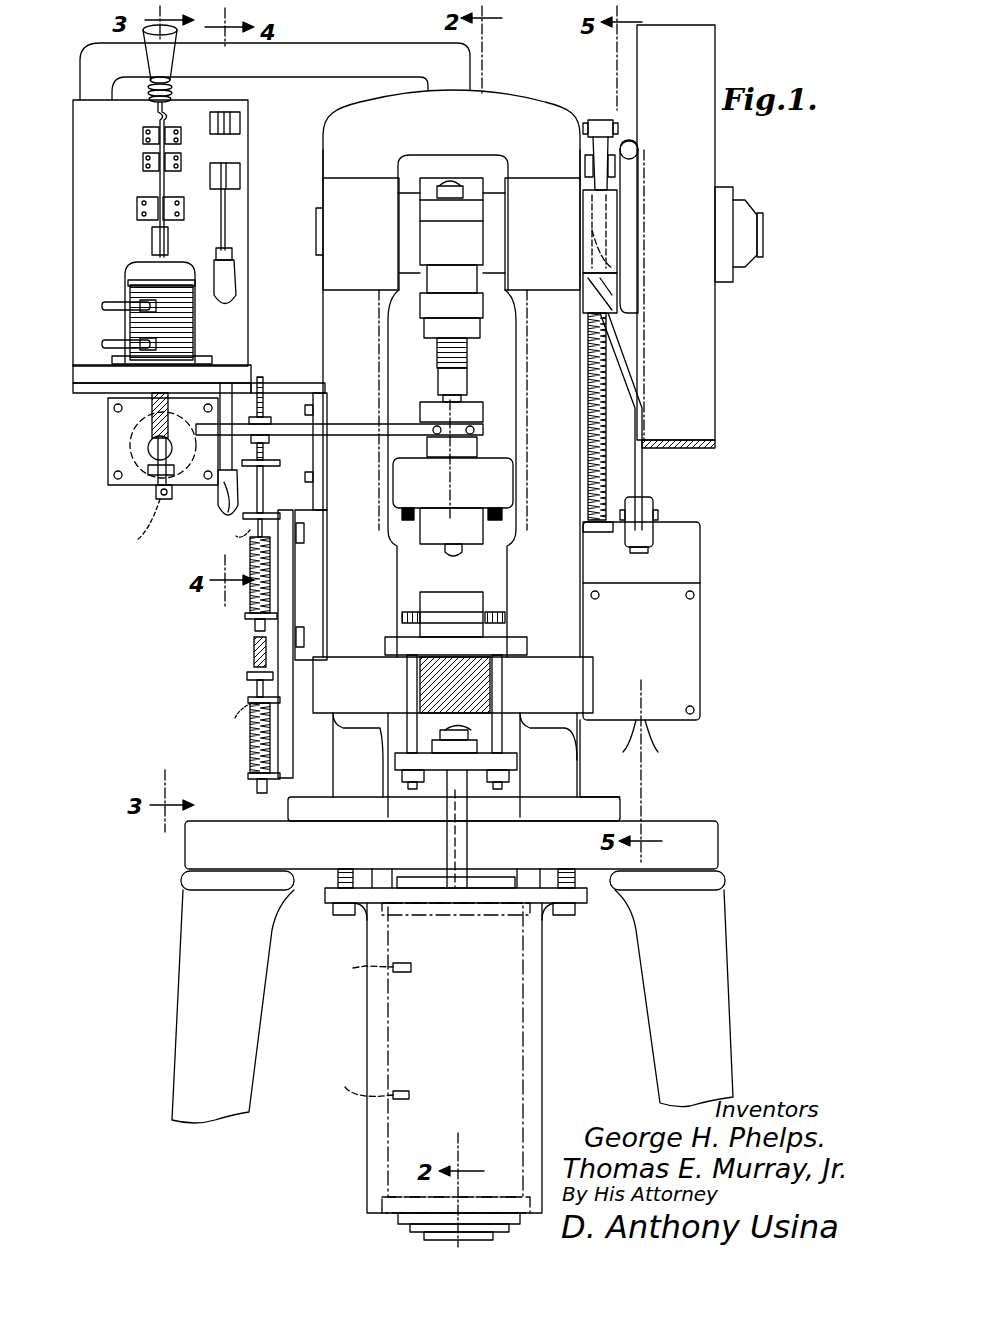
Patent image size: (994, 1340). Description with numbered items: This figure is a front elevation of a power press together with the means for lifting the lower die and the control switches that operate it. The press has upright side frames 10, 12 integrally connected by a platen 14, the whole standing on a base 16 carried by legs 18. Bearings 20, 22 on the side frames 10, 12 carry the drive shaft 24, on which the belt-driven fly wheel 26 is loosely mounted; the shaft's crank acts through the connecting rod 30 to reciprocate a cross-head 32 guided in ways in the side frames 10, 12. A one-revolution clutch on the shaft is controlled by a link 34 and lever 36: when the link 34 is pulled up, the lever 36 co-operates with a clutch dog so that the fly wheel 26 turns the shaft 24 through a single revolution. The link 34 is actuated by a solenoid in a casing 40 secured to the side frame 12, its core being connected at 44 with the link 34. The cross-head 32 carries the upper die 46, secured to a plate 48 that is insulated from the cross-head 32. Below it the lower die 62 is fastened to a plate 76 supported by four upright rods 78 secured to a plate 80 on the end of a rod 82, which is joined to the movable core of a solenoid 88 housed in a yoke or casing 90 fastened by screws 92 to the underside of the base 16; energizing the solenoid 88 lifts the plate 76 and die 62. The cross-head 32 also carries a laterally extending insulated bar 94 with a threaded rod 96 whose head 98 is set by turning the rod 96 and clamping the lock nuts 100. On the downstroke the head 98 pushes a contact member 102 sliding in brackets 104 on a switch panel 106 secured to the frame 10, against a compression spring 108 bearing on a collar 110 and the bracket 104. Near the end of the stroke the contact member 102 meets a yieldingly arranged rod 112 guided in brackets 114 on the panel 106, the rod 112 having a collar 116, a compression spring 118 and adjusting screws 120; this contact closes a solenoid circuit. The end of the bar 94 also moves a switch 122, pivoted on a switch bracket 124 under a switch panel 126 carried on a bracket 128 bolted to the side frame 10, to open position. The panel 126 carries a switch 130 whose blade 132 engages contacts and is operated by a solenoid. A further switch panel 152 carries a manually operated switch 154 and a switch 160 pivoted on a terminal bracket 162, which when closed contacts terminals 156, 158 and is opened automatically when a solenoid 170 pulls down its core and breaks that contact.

The side frame 10 is at (361, 403).
The side frame 12 is at (542, 403).
The platen 14 is at (453, 685).
The base 16 is at (451, 833).
The legs 18 is at (452, 997).
The bearing 20 is at (361, 234).
The bearing 22 is at (542, 234).
The drive shaft 24 is at (316, 240).
The fly wheel 26 is at (700, 156).
The connecting rod 30 is at (451, 349).
The cross-head 32 is at (453, 489).
The link 34 is at (645, 482).
The lever 36 is at (590, 165).
The casing 40 is at (700, 614).
The connection 44 is at (656, 512).
The upper die 46 is at (449, 551).
The plate 48 is at (451, 526).
The lower die 62 is at (475, 592).
The plate 76 is at (525, 648).
The upright rods 78 is at (500, 690).
The plate 80 is at (395, 760).
The rod 82 is at (447, 804).
The solenoid 88 is at (526, 1047).
The yoke or casing 90 is at (367, 1026).
The screws 92 is at (346, 915).
The insulated bar 94 is at (343, 428).
The threaded rod 96 is at (264, 442).
The head 98 is at (272, 468).
The lock nuts 100 is at (268, 428).
The contact member 102 is at (263, 490).
The brackets 104 is at (282, 515).
The switch panel 106 is at (293, 600).
The compression spring 108 is at (250, 568).
The collar 110 is at (252, 530).
The rod 112 is at (254, 652).
The brackets 114 is at (250, 687).
The collar 116 is at (238, 714).
The compression spring 118 is at (250, 746).
The adjusting screws 120 is at (247, 669).
The switch 122 is at (218, 505).
The switch bracket 124 is at (248, 382).
The switch panel 126 is at (73, 374).
The bracket 128 is at (306, 390).
The switch 130 is at (160, 432).
The blade 132 is at (158, 456).
The switch panel 152 is at (73, 170).
The manually operated switch 154 is at (235, 207).
The terminal 156 is at (143, 136).
The terminal 158 is at (143, 163).
The switch 160 is at (182, 58).
The terminal bracket 162 is at (137, 212).
The solenoid 170 is at (130, 323).